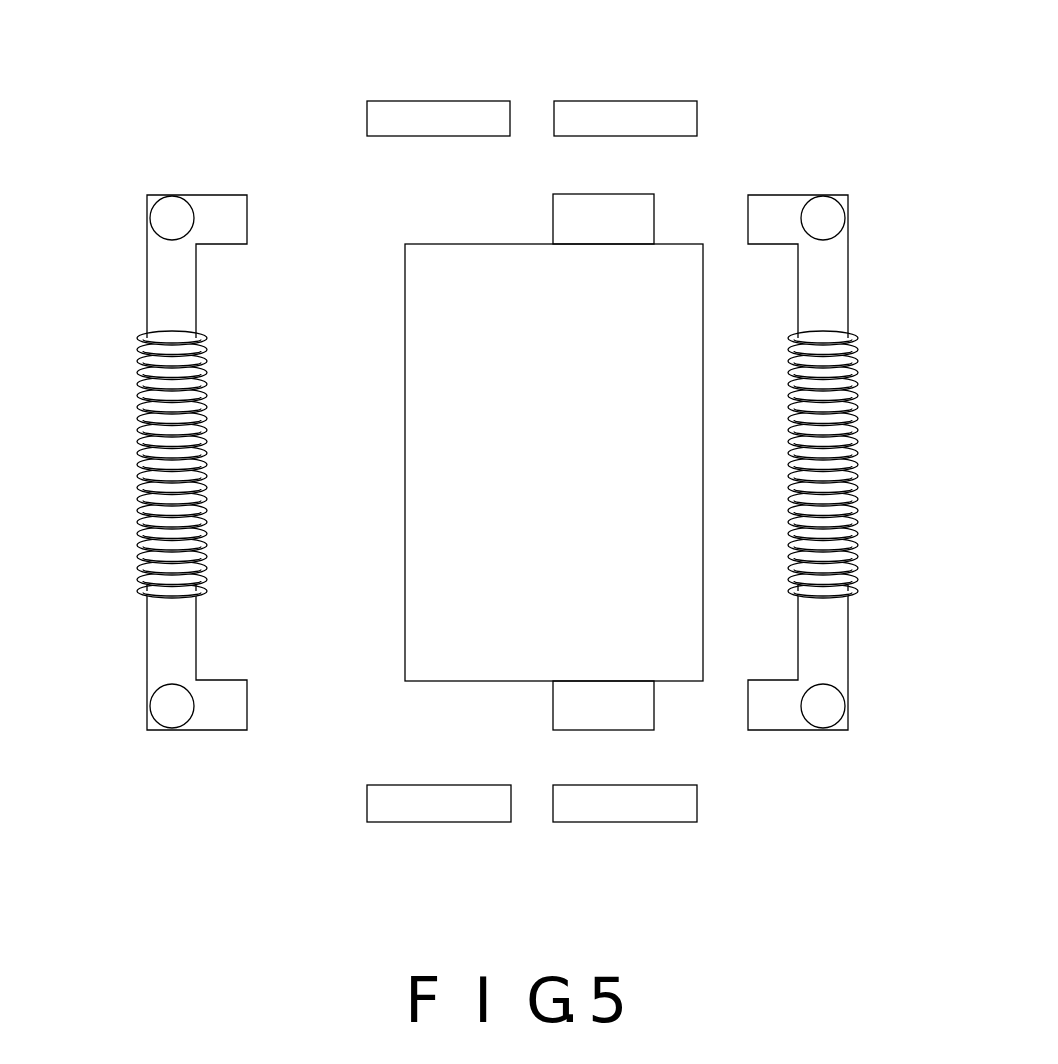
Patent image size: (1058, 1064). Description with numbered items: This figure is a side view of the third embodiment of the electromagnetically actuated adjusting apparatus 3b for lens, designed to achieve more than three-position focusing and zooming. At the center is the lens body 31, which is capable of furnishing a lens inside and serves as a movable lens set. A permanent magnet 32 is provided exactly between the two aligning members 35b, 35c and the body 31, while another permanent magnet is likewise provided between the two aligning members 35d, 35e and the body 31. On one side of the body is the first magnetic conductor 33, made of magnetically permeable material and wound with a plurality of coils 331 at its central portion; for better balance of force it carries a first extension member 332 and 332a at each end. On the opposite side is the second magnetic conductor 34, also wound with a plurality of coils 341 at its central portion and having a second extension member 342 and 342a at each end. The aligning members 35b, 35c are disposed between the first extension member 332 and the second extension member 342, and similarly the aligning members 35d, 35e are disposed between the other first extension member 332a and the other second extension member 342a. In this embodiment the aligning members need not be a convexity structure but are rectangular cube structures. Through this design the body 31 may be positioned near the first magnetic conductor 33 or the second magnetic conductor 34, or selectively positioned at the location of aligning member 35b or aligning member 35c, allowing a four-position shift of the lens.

The electromagnetically actuated adjusting apparatus for lens 3b is at (116, 163).
The lens body 31 is at (418, 470).
The permanent magnet 32 is at (565, 214).
The first magnetic conductor 33 is at (148, 273).
The coils 331 is at (138, 512).
The first extension member 332 is at (226, 203).
The first extension member 332a is at (226, 722).
The second magnetic conductor 34 is at (842, 283).
The coils 341 is at (857, 432).
The second extension member 342 is at (771, 202).
The second extension member 342a is at (771, 722).
The aligning member 35b is at (394, 116).
The aligning member 35c is at (690, 123).
The aligning member 35d is at (383, 800).
The aligning member 35e is at (688, 803).